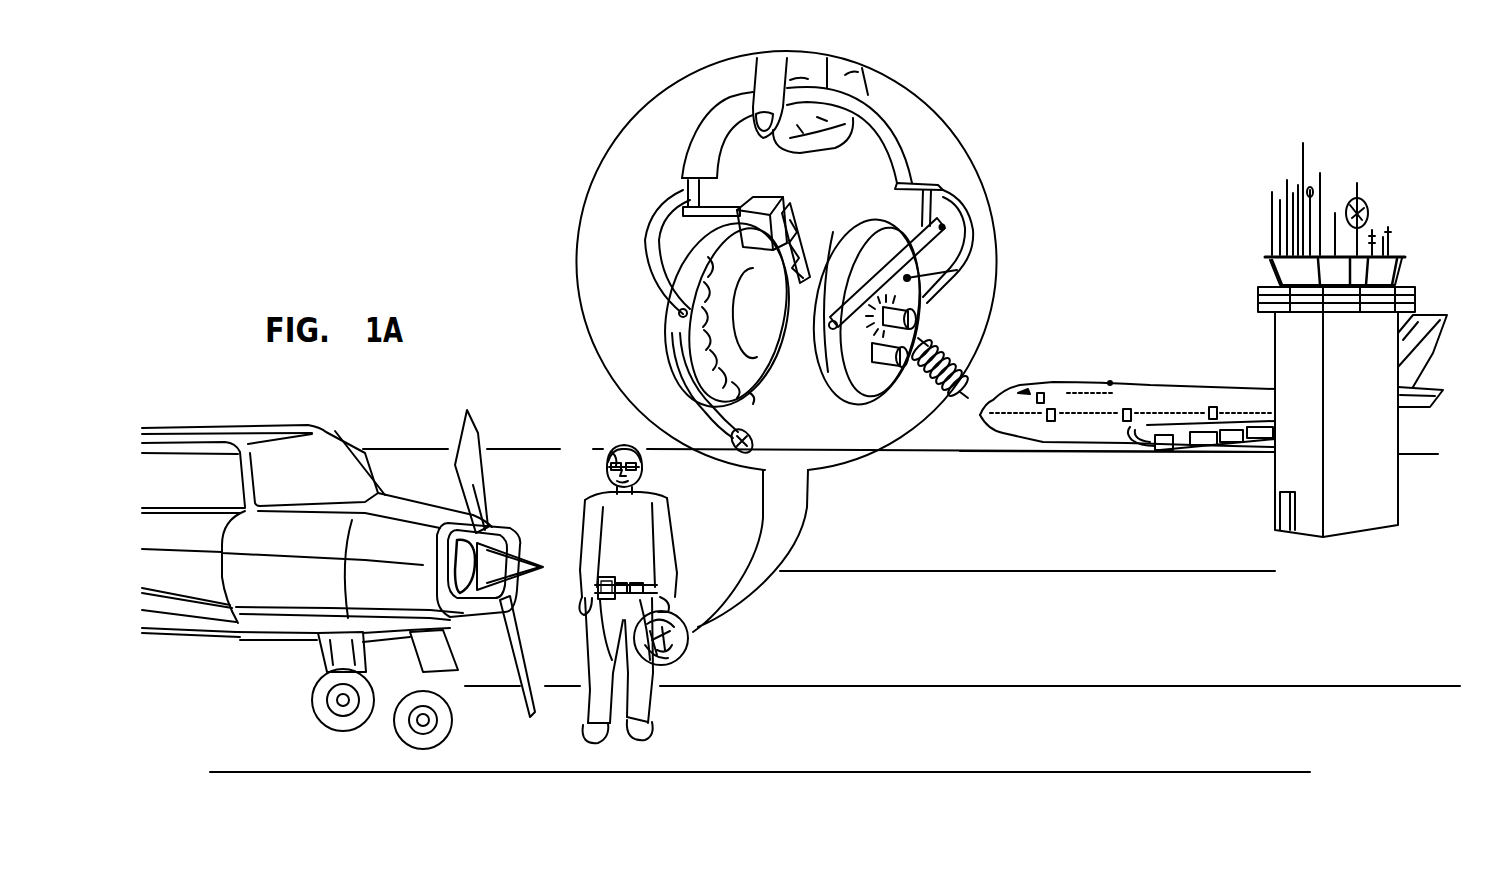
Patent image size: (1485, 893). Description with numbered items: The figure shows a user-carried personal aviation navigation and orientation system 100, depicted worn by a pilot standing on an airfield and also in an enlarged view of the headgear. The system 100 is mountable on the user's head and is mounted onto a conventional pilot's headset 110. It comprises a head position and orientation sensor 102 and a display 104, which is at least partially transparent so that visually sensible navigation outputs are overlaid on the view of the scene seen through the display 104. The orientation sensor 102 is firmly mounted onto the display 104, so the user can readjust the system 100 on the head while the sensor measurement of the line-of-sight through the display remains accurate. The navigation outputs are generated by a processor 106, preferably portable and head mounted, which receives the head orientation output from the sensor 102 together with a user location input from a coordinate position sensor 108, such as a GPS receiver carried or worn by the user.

The personal aviation navigation and orientation system 100 is at (685, 117).
The head position and orientation sensor 102 is at (753, 207).
The display 104 is at (792, 265).
The processor 106 is at (783, 213).
The coordinate position sensor 108 is at (610, 577).
The pilot's headset 110 is at (710, 150).